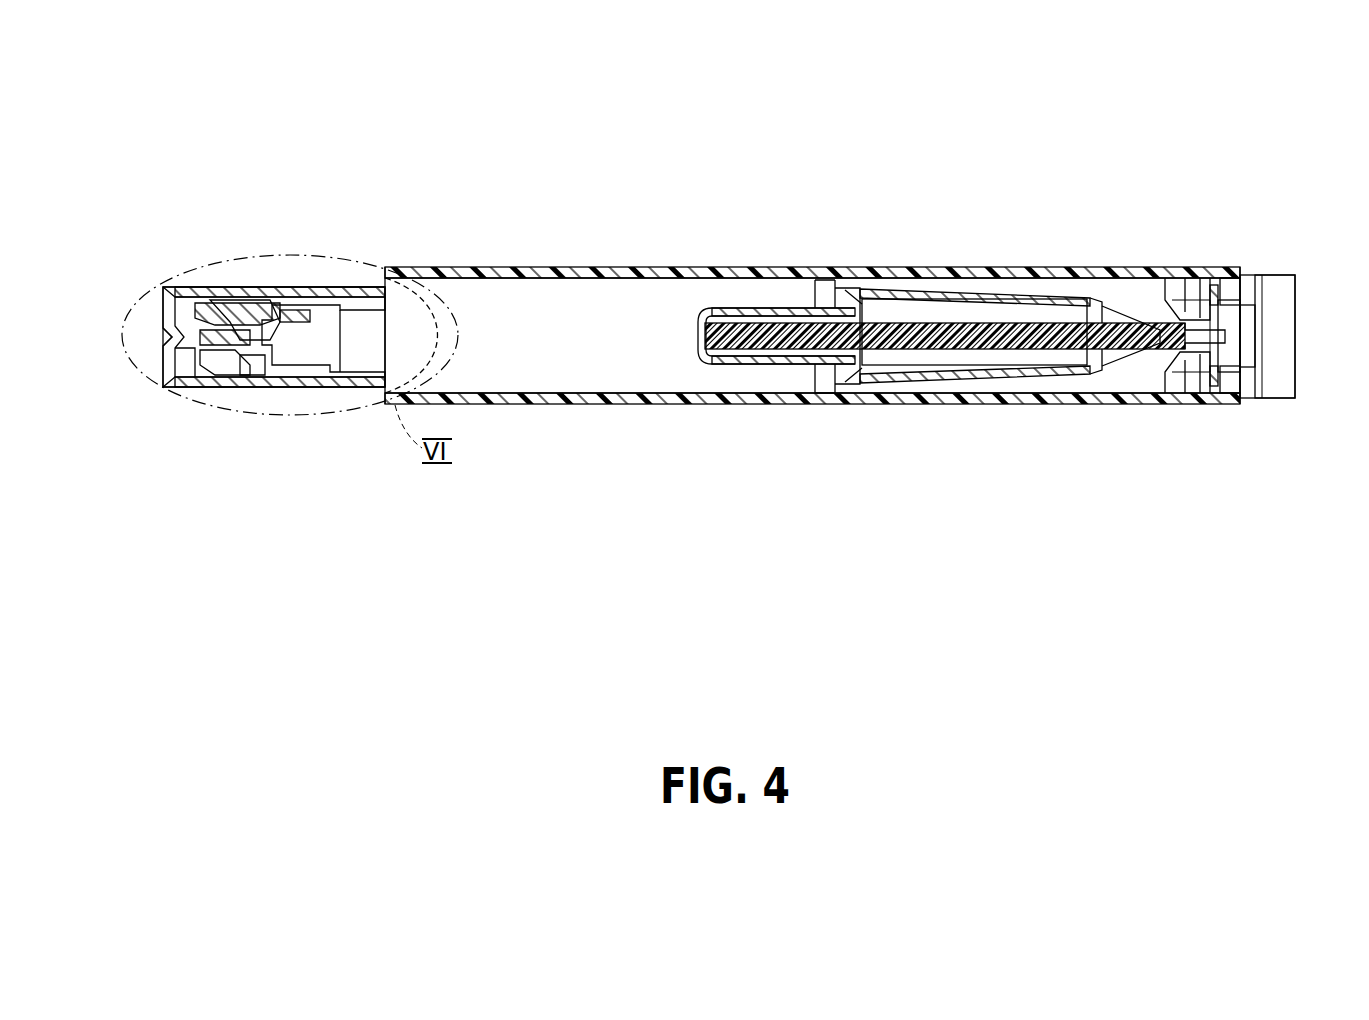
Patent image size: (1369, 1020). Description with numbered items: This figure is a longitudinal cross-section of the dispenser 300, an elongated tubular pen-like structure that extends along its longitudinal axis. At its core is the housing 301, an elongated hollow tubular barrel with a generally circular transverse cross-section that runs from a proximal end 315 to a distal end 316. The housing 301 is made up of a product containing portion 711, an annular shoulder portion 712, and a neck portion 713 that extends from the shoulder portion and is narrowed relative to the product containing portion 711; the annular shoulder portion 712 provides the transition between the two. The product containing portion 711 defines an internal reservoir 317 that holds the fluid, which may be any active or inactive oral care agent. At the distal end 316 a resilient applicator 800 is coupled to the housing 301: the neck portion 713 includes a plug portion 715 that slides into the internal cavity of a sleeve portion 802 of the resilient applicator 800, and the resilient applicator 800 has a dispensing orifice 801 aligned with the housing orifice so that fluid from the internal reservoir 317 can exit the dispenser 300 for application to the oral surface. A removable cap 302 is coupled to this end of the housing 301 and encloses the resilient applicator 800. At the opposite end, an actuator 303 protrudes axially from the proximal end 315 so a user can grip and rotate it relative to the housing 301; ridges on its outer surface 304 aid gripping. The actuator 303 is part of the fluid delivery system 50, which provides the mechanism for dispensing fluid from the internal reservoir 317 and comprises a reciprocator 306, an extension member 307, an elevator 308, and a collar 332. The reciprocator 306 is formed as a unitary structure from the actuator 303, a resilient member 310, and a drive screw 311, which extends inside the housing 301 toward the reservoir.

The dispenser 300 is at (1006, 142).
The housing 301 is at (780, 262).
The removable cap 302 is at (232, 283).
The actuator 303 is at (1270, 260).
The outer surface 304 is at (1292, 400).
The reciprocator 306 is at (1056, 316).
The extension member 307 is at (975, 290).
The elevator 308 is at (775, 376).
The resilient member 310 is at (1220, 405).
The drive screw 311 is at (912, 352).
The proximal end 315 is at (1222, 265).
The distal end 316 is at (213, 372).
The internal reservoir 317 is at (515, 335).
The collar 332 is at (1163, 382).
The fluid delivery system 50 is at (1110, 300).
The product containing portion 711 is at (633, 266).
The annular shoulder portion 712 is at (365, 288).
The neck portion 713 is at (320, 288).
The plug portion 715 is at (250, 372).
The resilient applicator 800 is at (198, 285).
The dispensing orifice 801 is at (168, 342).
The sleeve portion 802 is at (255, 290).